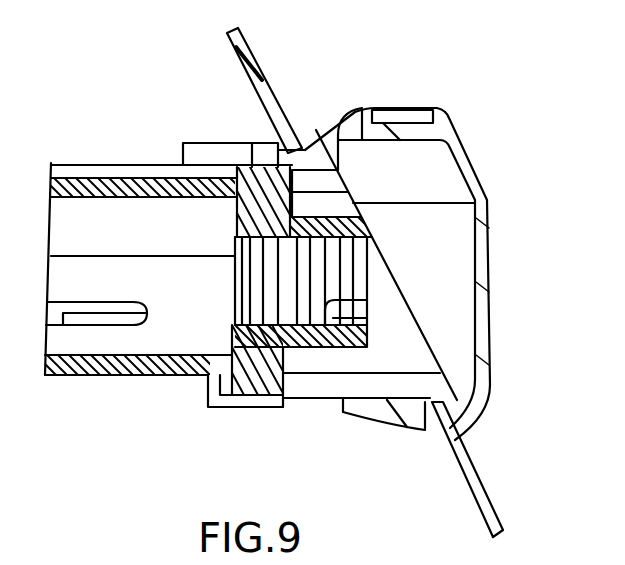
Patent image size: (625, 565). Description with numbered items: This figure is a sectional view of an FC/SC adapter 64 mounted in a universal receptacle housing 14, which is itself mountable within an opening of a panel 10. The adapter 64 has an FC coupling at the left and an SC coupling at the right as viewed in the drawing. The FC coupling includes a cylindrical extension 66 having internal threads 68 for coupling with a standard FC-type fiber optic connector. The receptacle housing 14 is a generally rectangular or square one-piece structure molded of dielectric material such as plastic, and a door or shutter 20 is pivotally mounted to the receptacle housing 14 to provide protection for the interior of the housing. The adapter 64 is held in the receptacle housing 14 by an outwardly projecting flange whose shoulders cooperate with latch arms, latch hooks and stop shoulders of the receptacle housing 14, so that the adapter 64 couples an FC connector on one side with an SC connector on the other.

The panel 10 is at (273, 112).
The universal receptacle housing 14 is at (223, 150).
The door or shutter 20 is at (478, 275).
The FC/SC adapter 64 is at (135, 165).
The cylindrical extension 66 is at (355, 218).
The internal threads 68 is at (275, 300).